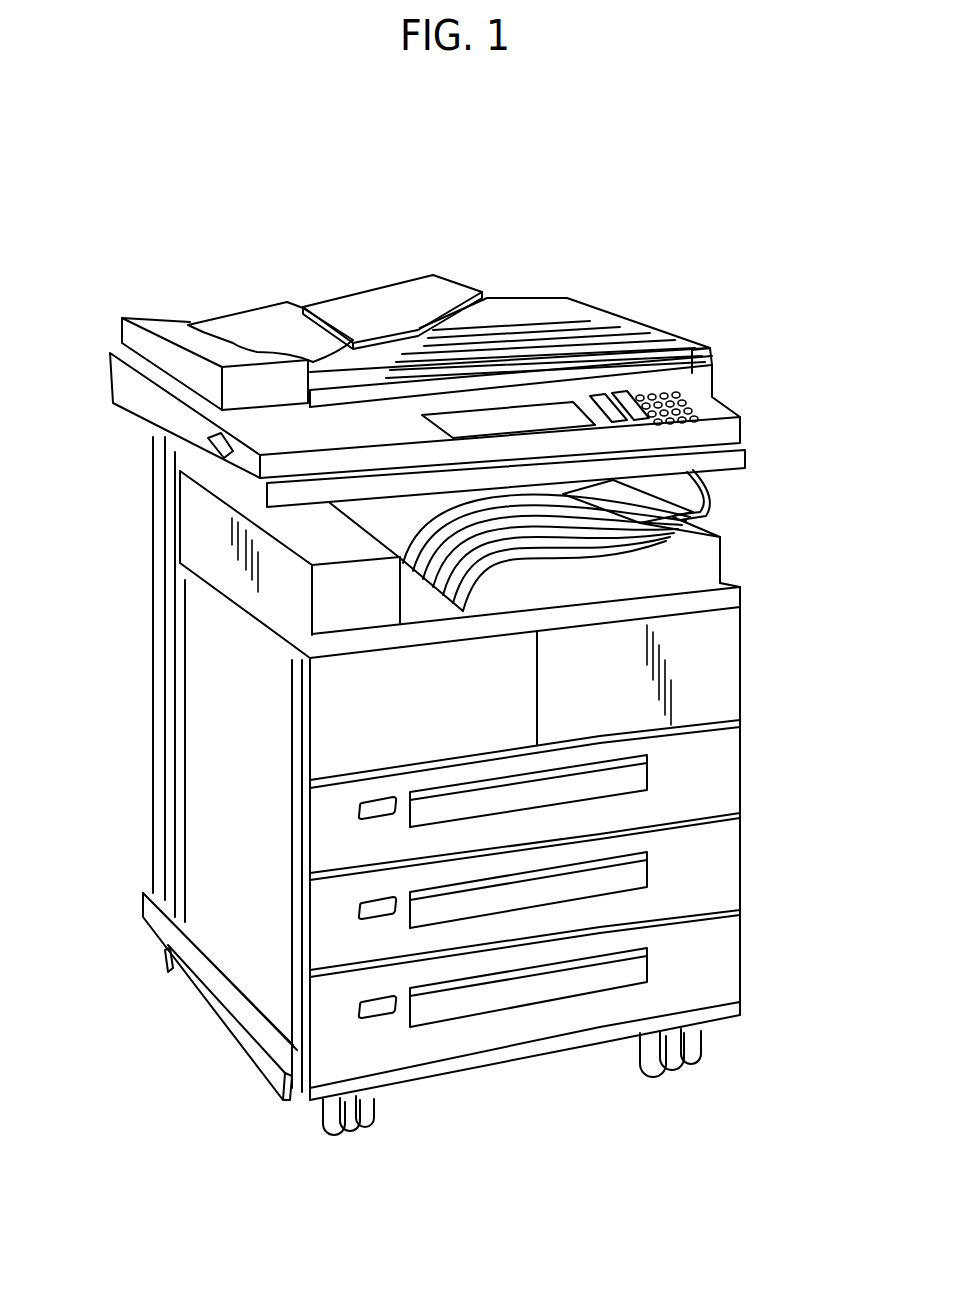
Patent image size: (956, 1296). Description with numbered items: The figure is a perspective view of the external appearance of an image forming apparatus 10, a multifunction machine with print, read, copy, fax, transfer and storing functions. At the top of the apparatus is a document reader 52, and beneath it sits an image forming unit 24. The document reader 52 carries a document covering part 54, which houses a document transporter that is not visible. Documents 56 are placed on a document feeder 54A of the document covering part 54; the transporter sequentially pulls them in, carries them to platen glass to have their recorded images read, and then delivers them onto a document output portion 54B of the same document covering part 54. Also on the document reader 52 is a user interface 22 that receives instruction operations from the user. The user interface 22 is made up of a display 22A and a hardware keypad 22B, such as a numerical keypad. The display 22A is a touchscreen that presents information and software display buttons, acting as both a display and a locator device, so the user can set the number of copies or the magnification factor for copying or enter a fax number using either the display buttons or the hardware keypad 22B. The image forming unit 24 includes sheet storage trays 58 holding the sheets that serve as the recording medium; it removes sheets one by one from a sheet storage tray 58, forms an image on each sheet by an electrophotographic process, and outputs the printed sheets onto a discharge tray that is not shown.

The image forming apparatus 10 is at (570, 177).
The user interface 22 is at (718, 395).
The display 22A is at (447, 423).
The hardware keypad 22B is at (667, 393).
The image forming unit 24 is at (216, 928).
The document reader 52 is at (130, 384).
The document covering part 54 is at (133, 340).
The document feeder 54A is at (401, 288).
The document output portion 54B is at (503, 337).
The document 56 is at (243, 327).
The sheet storage tray 58 is at (738, 776).